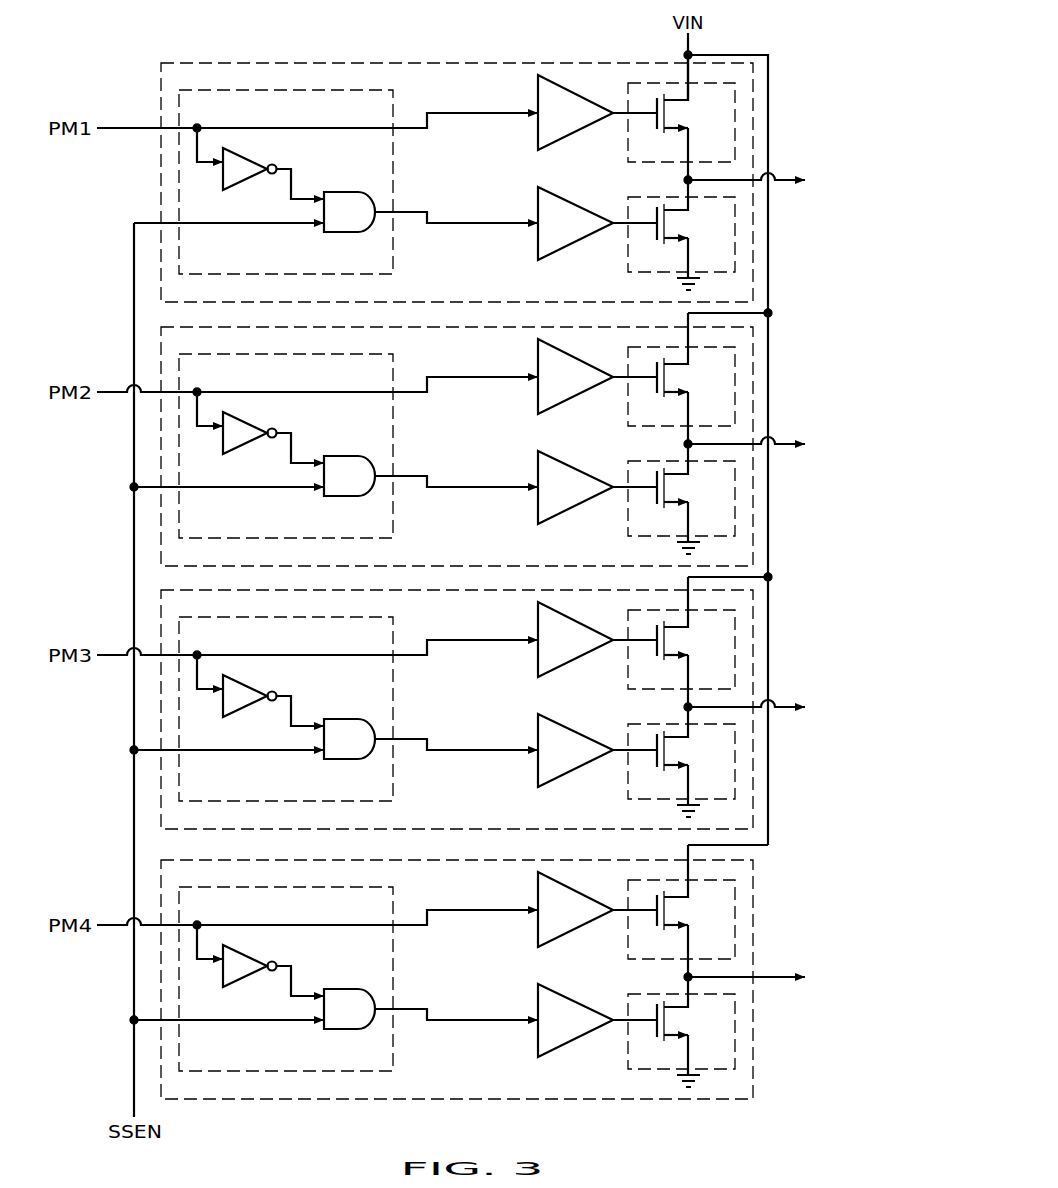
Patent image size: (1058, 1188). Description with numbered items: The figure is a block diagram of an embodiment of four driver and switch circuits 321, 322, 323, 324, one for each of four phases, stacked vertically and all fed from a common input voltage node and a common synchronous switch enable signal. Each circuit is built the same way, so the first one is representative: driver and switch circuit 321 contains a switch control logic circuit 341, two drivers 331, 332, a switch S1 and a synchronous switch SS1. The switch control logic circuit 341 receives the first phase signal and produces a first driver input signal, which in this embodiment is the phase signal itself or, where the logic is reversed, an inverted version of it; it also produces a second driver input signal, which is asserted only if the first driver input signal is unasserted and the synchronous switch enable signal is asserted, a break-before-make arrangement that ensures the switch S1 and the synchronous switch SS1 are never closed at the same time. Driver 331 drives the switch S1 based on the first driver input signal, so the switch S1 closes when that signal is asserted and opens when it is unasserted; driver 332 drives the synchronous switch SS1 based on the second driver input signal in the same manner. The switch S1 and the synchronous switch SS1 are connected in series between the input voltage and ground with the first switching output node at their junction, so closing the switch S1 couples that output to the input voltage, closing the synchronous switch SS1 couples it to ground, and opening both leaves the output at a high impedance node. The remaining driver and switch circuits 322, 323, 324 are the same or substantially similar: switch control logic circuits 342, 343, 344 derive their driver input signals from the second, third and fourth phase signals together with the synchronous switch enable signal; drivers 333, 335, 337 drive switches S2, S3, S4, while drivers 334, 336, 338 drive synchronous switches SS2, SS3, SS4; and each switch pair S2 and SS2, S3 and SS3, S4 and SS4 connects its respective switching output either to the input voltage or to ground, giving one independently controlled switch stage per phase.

The driver and switch circuit 321 is at (438, 284).
The driver and switch circuit 322 is at (438, 548).
The driver and switch circuit 323 is at (438, 811).
The driver and switch circuit 324 is at (438, 1081).
The driver 331 is at (583, 122).
The driver 332 is at (583, 232).
The driver 333 is at (583, 386).
The driver 334 is at (583, 496).
The driver 335 is at (583, 649).
The driver 336 is at (583, 759).
The driver 337 is at (583, 919).
The driver 338 is at (583, 1029).
The switch control logic circuit 341 is at (272, 254).
The switch control logic circuit 342 is at (272, 518).
The switch control logic circuit 343 is at (272, 781).
The switch control logic circuit 344 is at (272, 1051).
The switch S1 is at (660, 156).
The switch S2 is at (660, 420).
The switch S3 is at (660, 683).
The switch S4 is at (660, 953).
The synchronous switch SS1 is at (672, 266).
The synchronous switch SS2 is at (672, 530).
The synchronous switch SS3 is at (672, 793).
The synchronous switch SS4 is at (672, 1063).